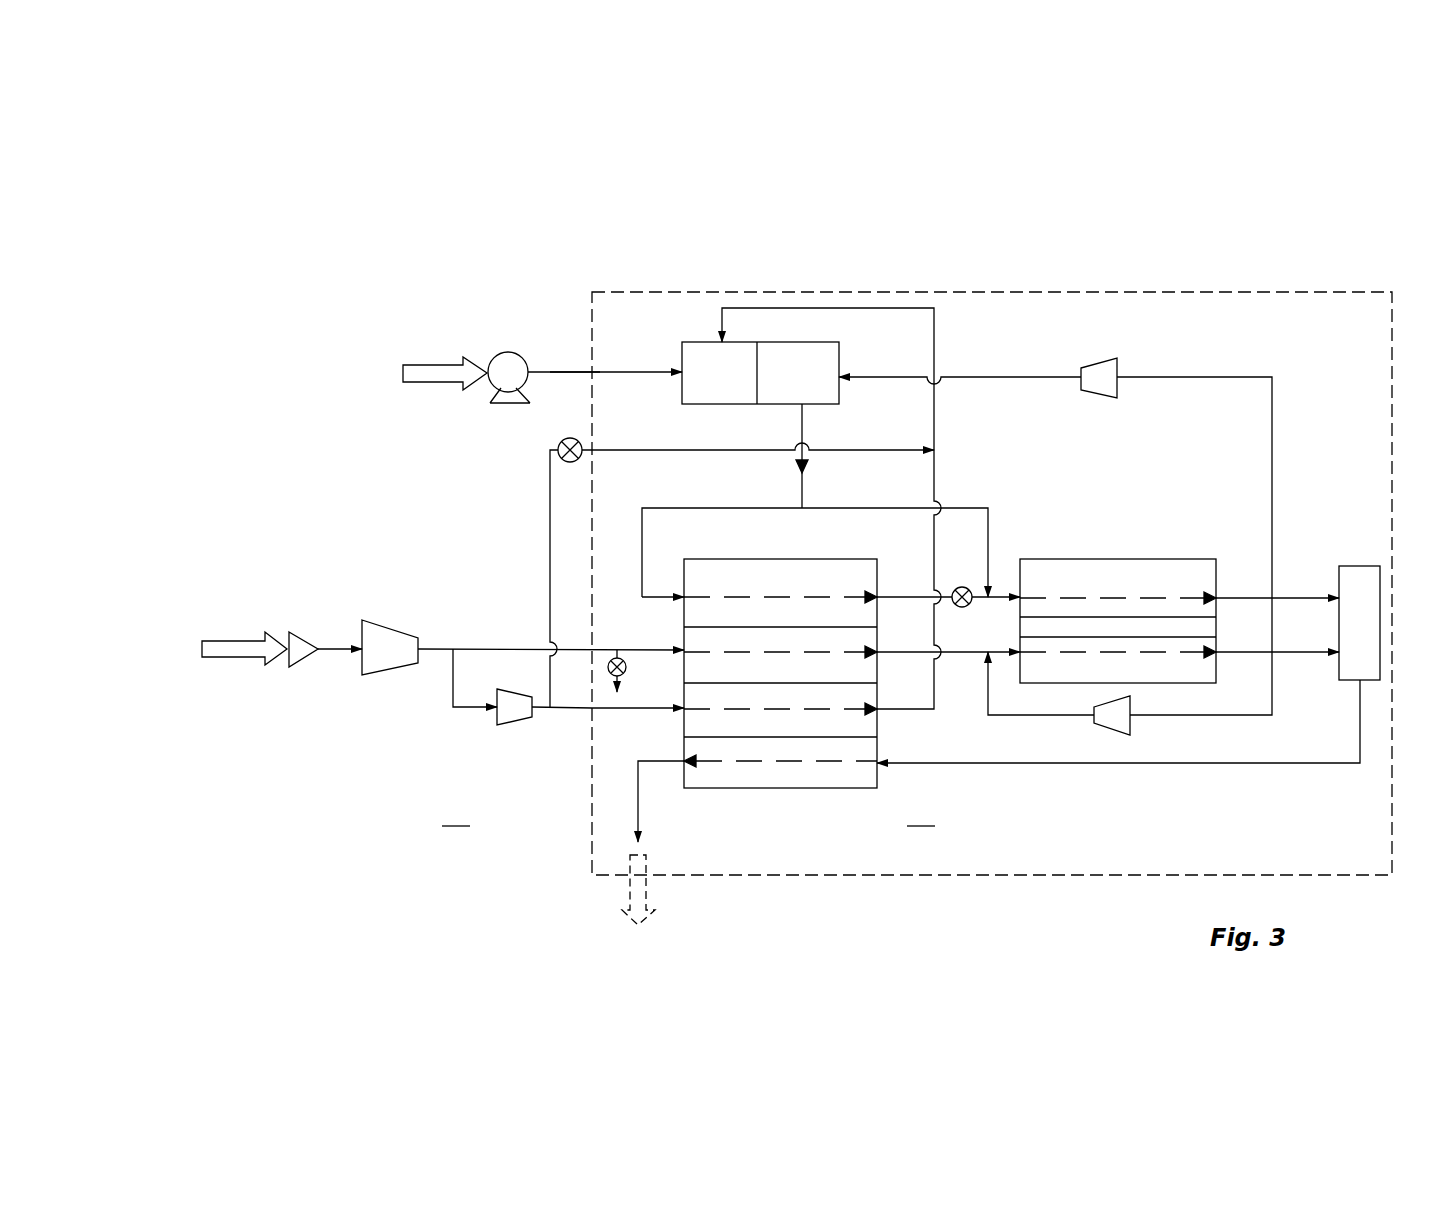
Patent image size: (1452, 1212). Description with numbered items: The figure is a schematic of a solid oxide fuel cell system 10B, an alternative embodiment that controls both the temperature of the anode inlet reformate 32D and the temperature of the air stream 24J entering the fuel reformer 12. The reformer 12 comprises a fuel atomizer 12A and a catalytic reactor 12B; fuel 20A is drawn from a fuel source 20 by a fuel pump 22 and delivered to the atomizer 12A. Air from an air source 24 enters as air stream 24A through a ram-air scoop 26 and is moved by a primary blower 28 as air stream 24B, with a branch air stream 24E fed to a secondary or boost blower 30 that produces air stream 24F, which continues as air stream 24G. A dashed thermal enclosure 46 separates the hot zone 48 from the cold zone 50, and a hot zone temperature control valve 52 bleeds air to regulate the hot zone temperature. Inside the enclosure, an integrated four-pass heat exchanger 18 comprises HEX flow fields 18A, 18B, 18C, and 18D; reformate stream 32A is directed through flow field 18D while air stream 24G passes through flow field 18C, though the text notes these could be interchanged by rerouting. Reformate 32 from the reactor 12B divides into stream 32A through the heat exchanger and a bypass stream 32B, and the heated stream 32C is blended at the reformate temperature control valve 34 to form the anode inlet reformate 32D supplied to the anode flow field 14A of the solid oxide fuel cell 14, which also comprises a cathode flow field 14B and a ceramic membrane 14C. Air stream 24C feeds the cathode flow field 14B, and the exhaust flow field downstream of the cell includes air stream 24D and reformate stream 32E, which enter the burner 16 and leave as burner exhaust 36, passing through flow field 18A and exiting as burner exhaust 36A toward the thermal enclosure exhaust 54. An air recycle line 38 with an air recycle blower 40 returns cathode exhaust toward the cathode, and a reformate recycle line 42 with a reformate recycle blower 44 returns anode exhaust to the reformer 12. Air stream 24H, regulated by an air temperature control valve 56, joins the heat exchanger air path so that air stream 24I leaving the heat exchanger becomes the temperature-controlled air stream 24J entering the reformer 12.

The SOFC system 10B is at (1055, 272).
The fuel reformer 12 is at (678, 360).
The fuel atomizer 12A is at (738, 386).
The catalytic reactor 12B is at (814, 386).
The solid oxide fuel cell 14 is at (1108, 552).
The anode flow field 14A is at (1108, 598).
The cathode flow field 14B is at (1108, 653).
The ceramic membrane 14C is at (1200, 632).
The burner 16 is at (1368, 558).
The heat exchanger 18 is at (820, 792).
The HEX flow field 18A is at (745, 762).
The HEX flow field 18B is at (752, 653).
The HEX flow field 18C is at (745, 710).
The HEX flow field 18D is at (752, 598).
The fuel source 20 is at (440, 360).
The fuel 20A is at (566, 377).
The fuel pump 22 is at (510, 352).
The air source 24 is at (230, 660).
The air stream 24A is at (328, 640).
The air stream 24B is at (468, 648).
The air stream 24C is at (962, 662).
The air stream 24D is at (1243, 658).
The air stream 24E is at (465, 710).
The air stream 24F is at (540, 710).
The air stream 24G is at (612, 712).
The air stream 24H is at (638, 452).
The air stream 24I is at (934, 480).
The air stream 24J is at (934, 358).
The ram-air scoop 26 is at (300, 666).
The primary blower 28 is at (378, 676).
The secondary blower 30 is at (505, 726).
The reformate stream 32 is at (810, 456).
The reformate stream 32A is at (688, 510).
The reformate stream 32B is at (872, 510).
The reformate stream 32C is at (888, 600).
The reformate stream 32D is at (988, 605).
The reformate stream 32E is at (1292, 594).
The reformate temperature control valve 34 is at (961, 586).
The burner exhaust 36 is at (1290, 766).
The burner exhaust 36A is at (640, 807).
The air recycle line 38 is at (1180, 717).
The air recycle blower 40 is at (1096, 730).
The reformate recycle line 42 is at (968, 380).
The reformate recycle blower 44 is at (1086, 366).
The thermal enclosure 46 is at (972, 876).
The hot zone 48 is at (922, 814).
The cold zone 50 is at (457, 814).
The hot zone temperature control valve 52 is at (627, 665).
The thermal enclosure exhaust 54 is at (648, 886).
The air temperature control valve 56 is at (555, 459).